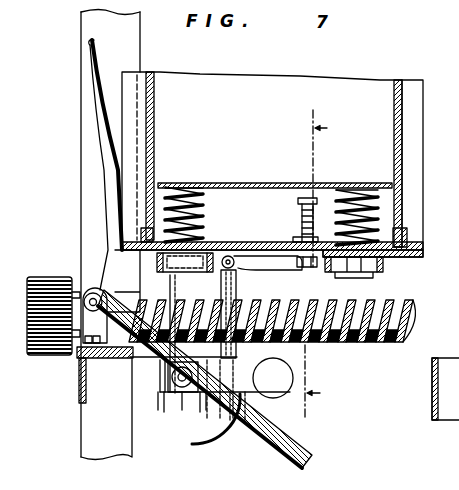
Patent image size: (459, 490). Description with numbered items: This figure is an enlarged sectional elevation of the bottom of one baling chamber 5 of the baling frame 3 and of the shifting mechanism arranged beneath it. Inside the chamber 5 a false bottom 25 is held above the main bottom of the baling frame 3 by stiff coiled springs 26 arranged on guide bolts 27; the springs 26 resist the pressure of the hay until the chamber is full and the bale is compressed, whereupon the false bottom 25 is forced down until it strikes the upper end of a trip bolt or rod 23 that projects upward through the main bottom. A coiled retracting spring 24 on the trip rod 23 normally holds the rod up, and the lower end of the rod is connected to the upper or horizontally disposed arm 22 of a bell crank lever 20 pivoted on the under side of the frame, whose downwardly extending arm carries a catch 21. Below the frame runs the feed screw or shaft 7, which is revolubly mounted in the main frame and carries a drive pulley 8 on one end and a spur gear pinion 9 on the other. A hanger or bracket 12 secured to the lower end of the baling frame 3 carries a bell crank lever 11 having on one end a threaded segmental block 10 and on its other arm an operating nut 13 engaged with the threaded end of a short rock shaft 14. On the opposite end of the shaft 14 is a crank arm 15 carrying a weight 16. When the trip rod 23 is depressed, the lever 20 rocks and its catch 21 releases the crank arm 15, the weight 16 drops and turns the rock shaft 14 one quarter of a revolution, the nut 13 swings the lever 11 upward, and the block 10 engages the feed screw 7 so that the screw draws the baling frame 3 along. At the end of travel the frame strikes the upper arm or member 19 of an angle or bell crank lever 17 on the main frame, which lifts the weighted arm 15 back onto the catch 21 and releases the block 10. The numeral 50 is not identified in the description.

The baling frame 3 is at (405, 243).
The baling chamber 5 is at (272, 164).
The feed screw or shaft 7 is at (386, 345).
The drive pulley 8 is at (312, 265).
The spur gear pinion 9 is at (48, 277).
The segmental block 10 is at (135, 362).
The bell crank lever 11 is at (162, 392).
The hanger or bracket 12 is at (118, 290).
The operating nut 13 is at (181, 410).
The rock shaft 14 is at (184, 392).
The crank arm 15 is at (238, 402).
The weight 16 is at (270, 398).
The angle or bell crank lever 17 is at (107, 180).
The upper arm or member 19 is at (90, 57).
The bell crank lever 20 is at (233, 256).
The catch 21 is at (250, 410).
The upper or horizontally disposed arm 22 is at (245, 262).
The trip bolt or rod 23 is at (301, 232).
The coiled retracting spring 24 is at (314, 204).
The false bottom 25 is at (262, 184).
The stiff coiled spring 26 is at (212, 187).
The guide bolt 27 is at (186, 186).
The base 50 is at (445, 424).